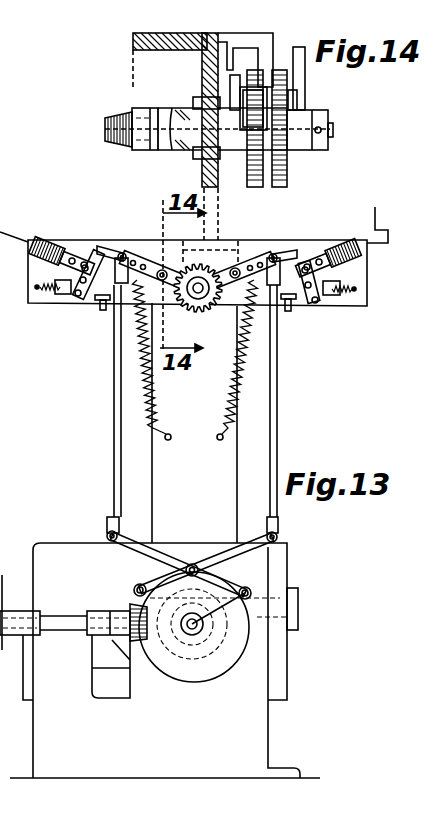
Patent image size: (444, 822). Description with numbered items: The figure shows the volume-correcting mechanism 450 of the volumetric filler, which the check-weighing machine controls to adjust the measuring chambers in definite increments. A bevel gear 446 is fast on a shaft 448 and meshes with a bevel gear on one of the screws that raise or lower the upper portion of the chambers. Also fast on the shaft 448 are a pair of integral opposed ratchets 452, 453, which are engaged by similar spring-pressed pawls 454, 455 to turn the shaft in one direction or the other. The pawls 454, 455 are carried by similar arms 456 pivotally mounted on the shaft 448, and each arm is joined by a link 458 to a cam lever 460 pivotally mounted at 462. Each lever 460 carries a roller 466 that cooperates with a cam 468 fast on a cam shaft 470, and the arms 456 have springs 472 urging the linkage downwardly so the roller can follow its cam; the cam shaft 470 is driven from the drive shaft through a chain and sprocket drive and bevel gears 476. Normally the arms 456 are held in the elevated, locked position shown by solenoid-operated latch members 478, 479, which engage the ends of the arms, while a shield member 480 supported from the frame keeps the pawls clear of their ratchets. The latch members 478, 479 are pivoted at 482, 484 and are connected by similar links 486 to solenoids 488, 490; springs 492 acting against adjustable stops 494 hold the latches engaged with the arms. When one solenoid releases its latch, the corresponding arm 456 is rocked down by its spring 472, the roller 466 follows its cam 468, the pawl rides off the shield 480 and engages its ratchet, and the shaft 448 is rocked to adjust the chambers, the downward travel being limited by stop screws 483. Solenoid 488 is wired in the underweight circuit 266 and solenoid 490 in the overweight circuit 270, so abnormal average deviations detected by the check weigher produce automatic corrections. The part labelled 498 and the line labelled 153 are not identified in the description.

In FIG. 14, the bevel gear 446 is at (118, 113).
In FIG. 14, the shaft 448 is at (333, 132).
In FIG. 13, the shaft 448 is at (200, 312).
In FIG. 14, the ratchet 453 is at (287, 166).
In FIG. 13, the underweight circuit 266 is at (14, 206).
In FIG. 13, the overweight circuit 270 is at (393, 195).
In FIG. 13, the cam lever 460 is at (228, 555).
In FIG. 13, the roller 466 is at (192, 563).
In FIG. 13, the pivot 462 is at (138, 584).
In FIG. 13, the link 458 is at (272, 465).
In FIG. 13, the rod 153 is at (275, 370).
In FIG. 13, the arm 456 is at (112, 248).
In FIG. 13, the shield member 480 is at (163, 265).
In FIG. 13, the pawl 454 is at (177, 300).
In FIG. 13, the pawl 455 is at (243, 330).
In FIG. 13, the spring 472 is at (210, 425).
In FIG. 13, the ratchet 452 is at (208, 262).
In FIG. 13, the solenoid 488 is at (45, 262).
In FIG. 13, the link 486 is at (70, 268).
In FIG. 13, the solenoid 490 is at (367, 258).
In FIG. 13, the pivot 482 is at (82, 301).
In FIG. 13, the pivot 484 is at (290, 306).
In FIG. 13, the latch member 479 is at (306, 264).
In FIG. 13, the latch member 478 is at (92, 258).
In FIG. 13, the stop screw 483 is at (97, 252).
In FIG. 13, the mount 498 is at (55, 326).
In FIG. 13, the adjustable stop 494 is at (37, 292).
In FIG. 13, the spring 492 is at (53, 295).
In FIG. 13, the correcting mechanism 450 is at (353, 345).
In FIG. 13, the bevel gears 476 is at (133, 607).
In FIG. 13, the cam 468 is at (183, 660).
In FIG. 13, the cam shaft 470 is at (195, 630).